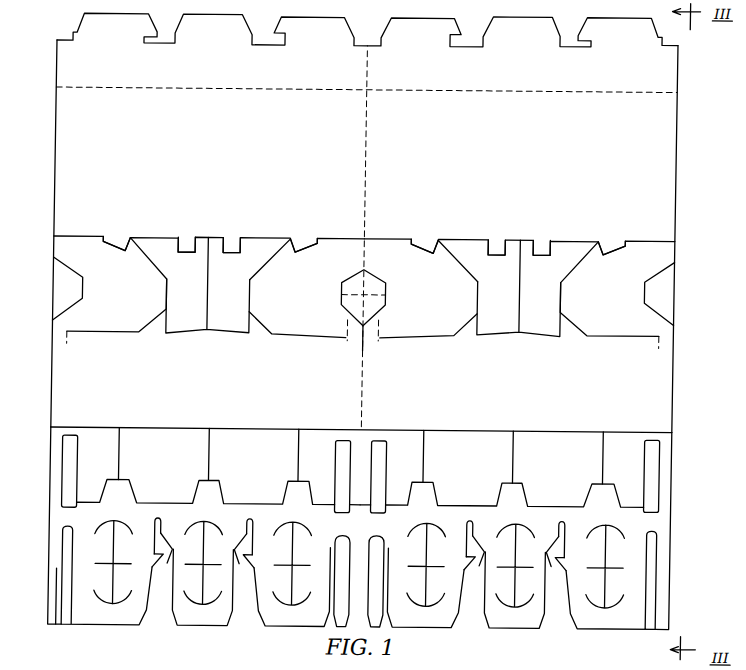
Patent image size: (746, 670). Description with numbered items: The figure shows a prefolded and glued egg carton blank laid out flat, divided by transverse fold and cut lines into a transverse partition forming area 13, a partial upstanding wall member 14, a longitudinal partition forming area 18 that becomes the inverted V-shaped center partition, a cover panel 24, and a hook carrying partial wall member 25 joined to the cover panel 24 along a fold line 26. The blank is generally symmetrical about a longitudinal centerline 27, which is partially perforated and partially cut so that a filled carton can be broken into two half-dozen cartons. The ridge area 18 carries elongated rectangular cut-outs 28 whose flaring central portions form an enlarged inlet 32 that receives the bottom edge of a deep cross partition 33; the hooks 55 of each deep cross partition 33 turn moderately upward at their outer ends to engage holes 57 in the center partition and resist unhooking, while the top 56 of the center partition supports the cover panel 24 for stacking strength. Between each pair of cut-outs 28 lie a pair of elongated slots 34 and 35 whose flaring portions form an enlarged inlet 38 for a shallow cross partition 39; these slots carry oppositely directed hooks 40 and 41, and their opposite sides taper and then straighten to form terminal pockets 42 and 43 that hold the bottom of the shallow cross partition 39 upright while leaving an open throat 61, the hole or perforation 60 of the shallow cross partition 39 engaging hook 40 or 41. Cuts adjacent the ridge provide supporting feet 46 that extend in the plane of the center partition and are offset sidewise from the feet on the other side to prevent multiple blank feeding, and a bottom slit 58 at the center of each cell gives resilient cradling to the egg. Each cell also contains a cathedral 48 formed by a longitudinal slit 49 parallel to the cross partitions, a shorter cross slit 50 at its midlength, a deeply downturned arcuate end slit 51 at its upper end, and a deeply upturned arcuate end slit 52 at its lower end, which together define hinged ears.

The transverse partition forming area 13 is at (679, 242).
The partial upstanding wall member 14 is at (664, 374).
The longitudinal partition forming area 18 is at (679, 584).
The cover panel 24 is at (679, 137).
The hook carrying partial wall member 25 is at (679, 60).
The fold line 26 is at (679, 84).
The longitudinal centerline 27 is at (372, 167).
The cut-outs 28 is at (65, 557).
The enlarged inlet 32 is at (71, 623).
The deep cross partition 33 is at (114, 292).
The elongated slot 34 is at (563, 576).
The elongated slot 35 is at (472, 580).
The enlarged inlet 38 is at (171, 618).
The shallow cross partition 39 is at (181, 292).
The hook 40 is at (168, 554).
The hook 41 is at (264, 562).
The terminal pocket 42 is at (170, 521).
The terminal pocket 43 is at (262, 527).
The supporting feet 46 is at (137, 482).
The cathedral 48 is at (126, 517).
The longitudinal slit 49 is at (115, 549).
The cross slit 50 is at (116, 562).
The downturned end slit 51 is at (127, 601).
The upturned end slit 52 is at (109, 522).
The hooks 55 is at (128, 247).
The top 56 is at (112, 624).
The holes 57 is at (69, 467).
The bottom slit 58 is at (126, 448).
The hole or perforation 60 is at (193, 236).
The open throat 61 is at (182, 549).